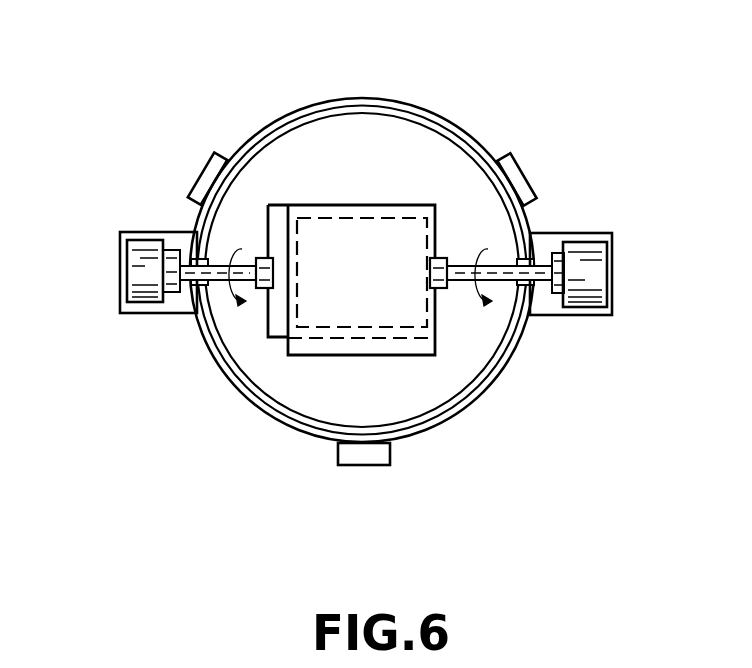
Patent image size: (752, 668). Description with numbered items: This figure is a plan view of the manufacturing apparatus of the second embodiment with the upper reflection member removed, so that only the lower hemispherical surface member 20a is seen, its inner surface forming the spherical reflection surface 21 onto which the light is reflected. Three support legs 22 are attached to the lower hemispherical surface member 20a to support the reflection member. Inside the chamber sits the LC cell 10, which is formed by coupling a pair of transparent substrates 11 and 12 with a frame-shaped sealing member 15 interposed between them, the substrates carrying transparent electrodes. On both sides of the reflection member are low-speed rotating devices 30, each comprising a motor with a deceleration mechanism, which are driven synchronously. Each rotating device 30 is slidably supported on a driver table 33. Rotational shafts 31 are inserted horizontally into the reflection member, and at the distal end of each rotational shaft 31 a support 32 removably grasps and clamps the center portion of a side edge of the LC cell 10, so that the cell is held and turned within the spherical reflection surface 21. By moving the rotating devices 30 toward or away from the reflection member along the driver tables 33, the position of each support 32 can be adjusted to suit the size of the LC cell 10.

The LC cell 10 is at (355, 197).
The transparent substrate 11 is at (337, 350).
The transparent substrate 12 is at (278, 333).
The frame-shaped sealing member 15 is at (390, 342).
The lower hemispherical surface member 20a is at (490, 389).
The spherical reflection surface 21 is at (280, 146).
The support leg 22 is at (215, 157).
The low-speed rotating device 30 is at (132, 288).
The rotational shaft 31 is at (208, 330).
The support 32 is at (263, 258).
The driver table 33 is at (127, 248).